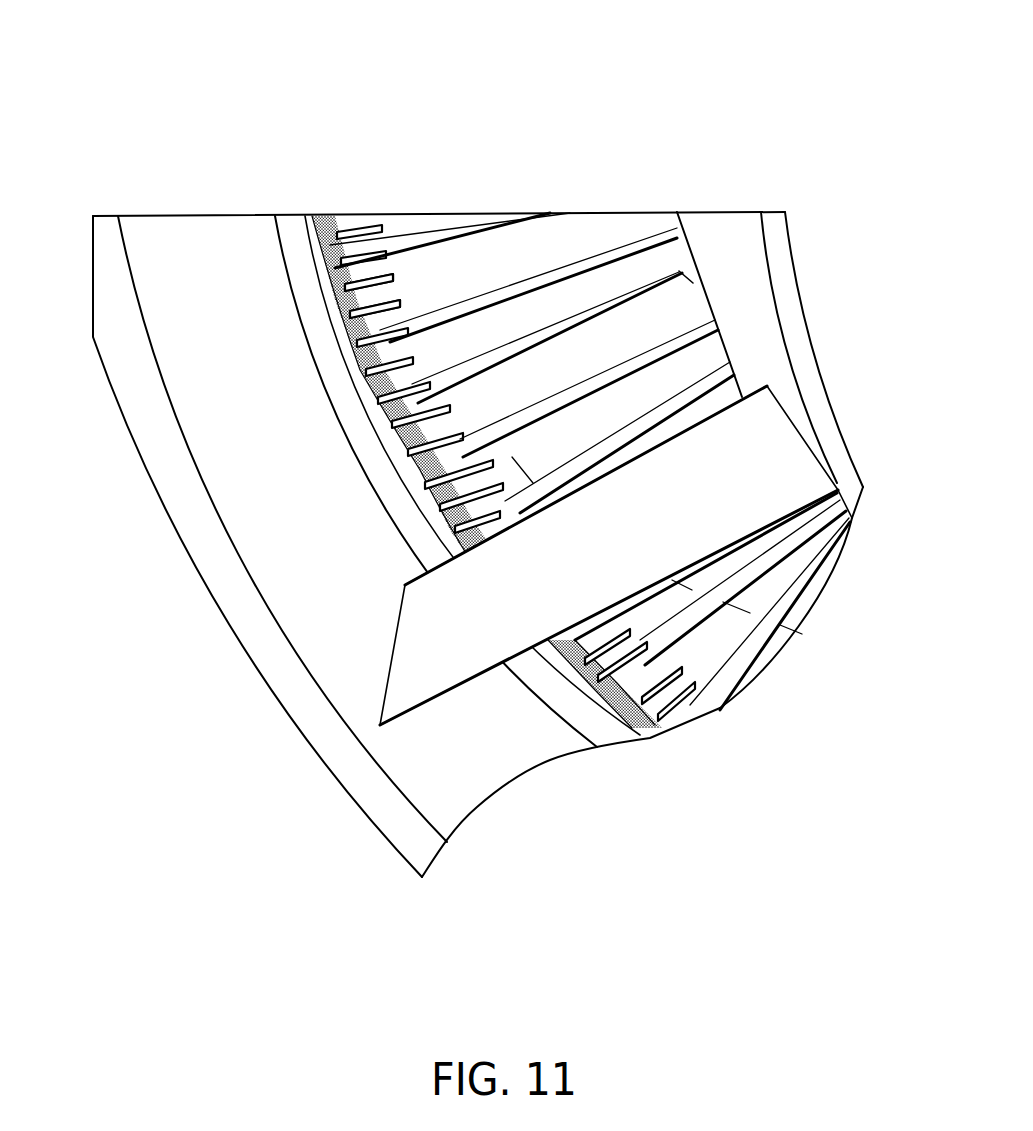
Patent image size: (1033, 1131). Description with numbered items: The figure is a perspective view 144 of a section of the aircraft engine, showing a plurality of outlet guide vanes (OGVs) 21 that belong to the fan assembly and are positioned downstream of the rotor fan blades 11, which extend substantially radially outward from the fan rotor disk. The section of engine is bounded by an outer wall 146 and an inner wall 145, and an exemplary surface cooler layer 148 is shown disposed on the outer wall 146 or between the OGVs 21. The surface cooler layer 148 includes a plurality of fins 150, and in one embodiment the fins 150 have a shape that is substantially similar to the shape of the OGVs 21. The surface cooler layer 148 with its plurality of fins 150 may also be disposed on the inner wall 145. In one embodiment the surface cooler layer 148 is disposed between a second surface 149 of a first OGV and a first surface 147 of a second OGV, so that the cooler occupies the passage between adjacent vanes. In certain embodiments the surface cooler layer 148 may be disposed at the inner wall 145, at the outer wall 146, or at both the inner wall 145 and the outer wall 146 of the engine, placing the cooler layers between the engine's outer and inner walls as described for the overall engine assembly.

The perspective view 144 is at (752, 54).
The outlet guide vanes 21 is at (655, 297).
The fins 150 is at (395, 277).
The first surface 147 is at (591, 324).
The second surface 149 is at (597, 272).
The surface cooler layer 148 is at (430, 445).
The inner wall 145 is at (735, 288).
The rotor fan blades 11 is at (783, 453).
The outer wall 146 is at (254, 498).